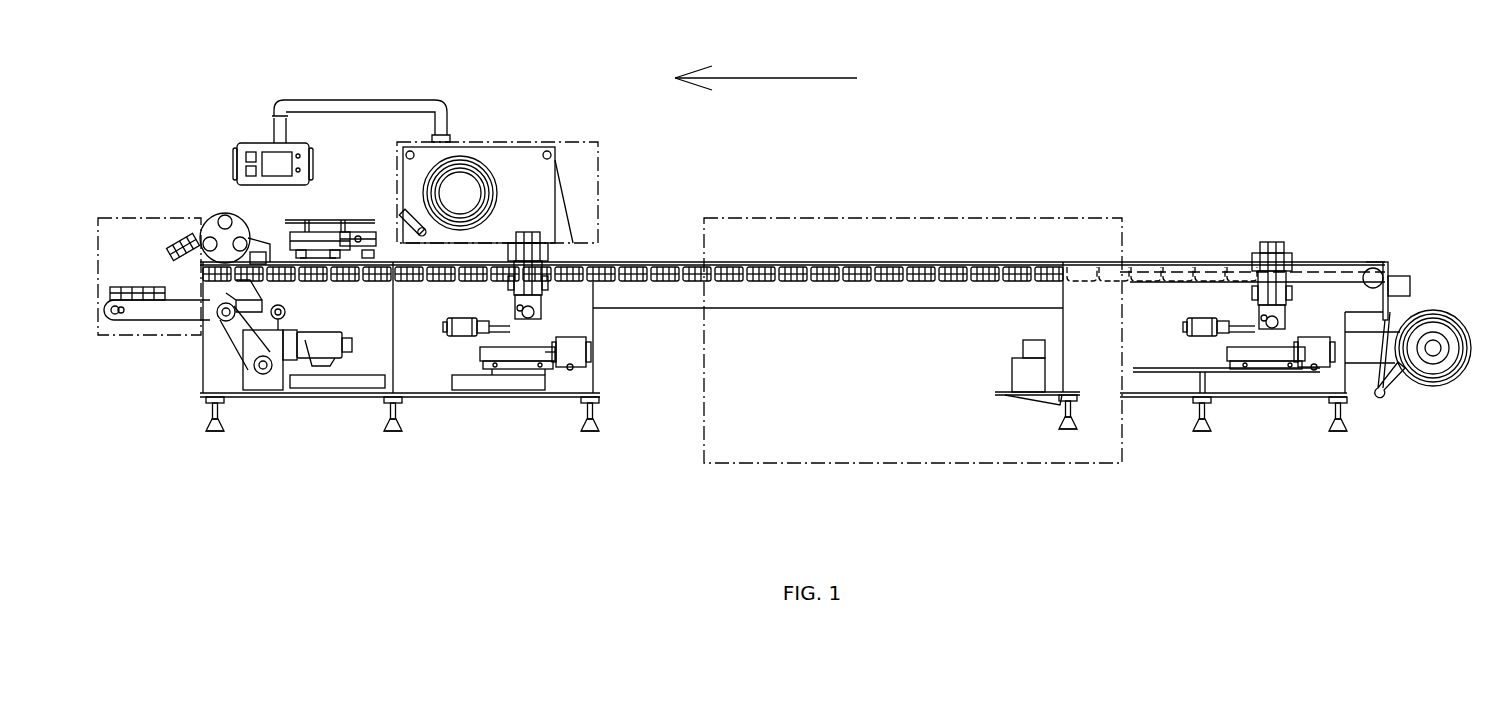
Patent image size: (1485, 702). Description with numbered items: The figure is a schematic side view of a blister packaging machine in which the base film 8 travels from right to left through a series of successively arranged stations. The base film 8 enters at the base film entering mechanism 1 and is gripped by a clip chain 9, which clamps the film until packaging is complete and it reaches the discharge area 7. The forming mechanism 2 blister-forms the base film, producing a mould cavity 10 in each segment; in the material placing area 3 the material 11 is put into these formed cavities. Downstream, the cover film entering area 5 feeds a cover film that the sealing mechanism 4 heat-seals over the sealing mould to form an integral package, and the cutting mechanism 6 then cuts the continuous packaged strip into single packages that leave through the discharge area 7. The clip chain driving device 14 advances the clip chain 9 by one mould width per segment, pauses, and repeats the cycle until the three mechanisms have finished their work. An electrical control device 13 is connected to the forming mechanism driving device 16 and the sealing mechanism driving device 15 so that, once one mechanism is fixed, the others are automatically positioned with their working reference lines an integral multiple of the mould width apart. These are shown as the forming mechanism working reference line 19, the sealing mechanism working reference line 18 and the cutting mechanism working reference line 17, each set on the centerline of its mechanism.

The base film entering mechanism 1 is at (1395, 280).
The forming mechanism 2 is at (1272, 345).
The material placing area 3 is at (877, 243).
The sealing mechanism 4 is at (545, 365).
The cover film entering area 5 is at (580, 168).
The cutting mechanism 6 is at (321, 310).
The discharge area 7 is at (135, 246).
The base film 8 is at (1440, 372).
The clip chain 9 is at (1313, 265).
The mould cavity after base film is formed 10 is at (1150, 272).
The material 11 is at (985, 275).
The electrical control device 13 is at (278, 157).
The clip chain driving device 14 is at (322, 345).
The sealing mechanism driving device 15 is at (592, 360).
The forming mechanism driving device 16 is at (1330, 350).
The cutting mechanism working reference line 17 is at (323, 215).
The sealing mechanism working reference line 18 is at (527, 245).
The forming mechanism working reference line 19 is at (1272, 235).